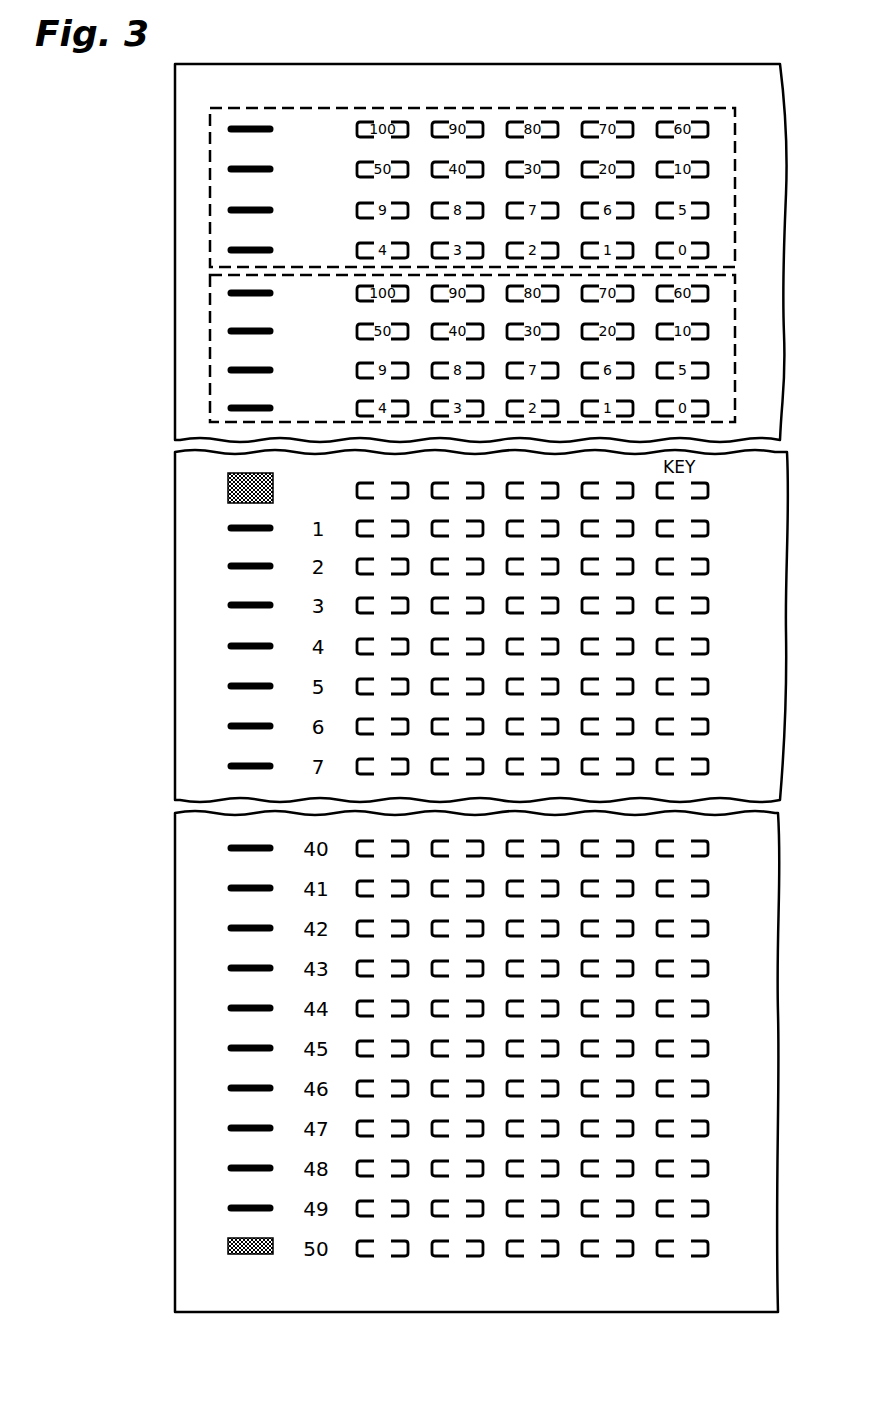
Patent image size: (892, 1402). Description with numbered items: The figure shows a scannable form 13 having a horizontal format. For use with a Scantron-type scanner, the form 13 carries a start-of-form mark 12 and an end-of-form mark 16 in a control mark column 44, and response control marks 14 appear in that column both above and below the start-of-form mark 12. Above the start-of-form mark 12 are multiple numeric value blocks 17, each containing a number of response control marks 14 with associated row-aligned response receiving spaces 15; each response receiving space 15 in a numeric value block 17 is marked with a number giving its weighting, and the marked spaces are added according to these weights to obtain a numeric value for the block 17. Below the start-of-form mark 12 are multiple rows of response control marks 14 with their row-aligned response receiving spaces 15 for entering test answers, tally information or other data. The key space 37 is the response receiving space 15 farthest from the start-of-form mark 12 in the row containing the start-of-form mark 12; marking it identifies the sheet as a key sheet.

The scannable form 13 is at (148, 126).
The response receiving space 15 is at (540, 95).
The numeric value block 17 is at (202, 310).
The response control mark 14 is at (232, 371).
The start-of-form mark 12 is at (228, 488).
The end-of-form mark 16 is at (232, 1240).
The key space 37 is at (700, 490).
The control mark column 44 is at (245, 1270).